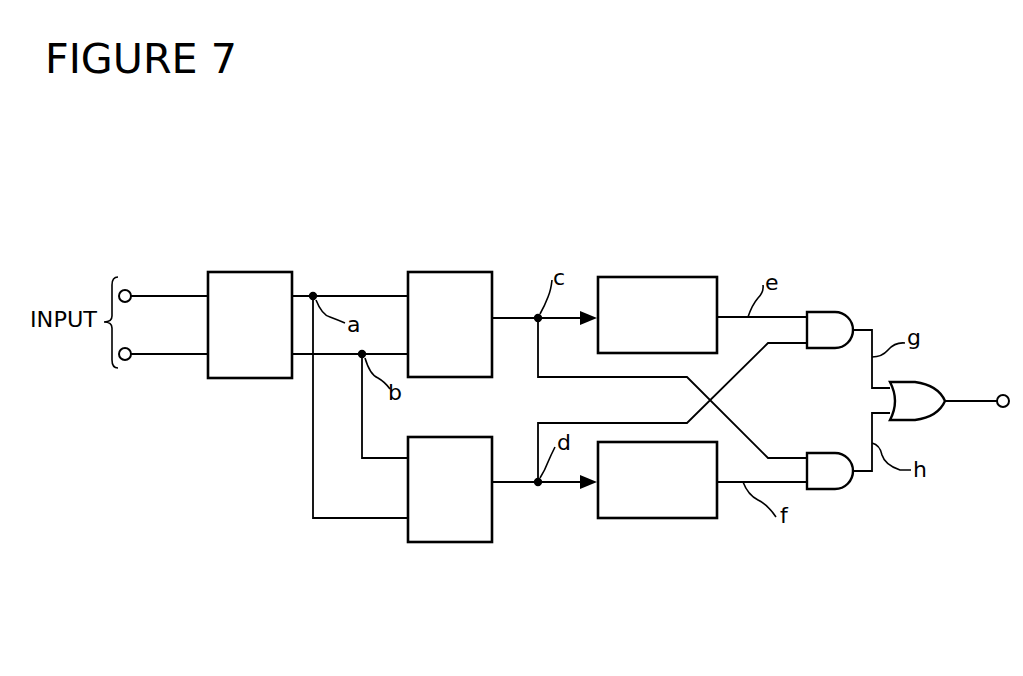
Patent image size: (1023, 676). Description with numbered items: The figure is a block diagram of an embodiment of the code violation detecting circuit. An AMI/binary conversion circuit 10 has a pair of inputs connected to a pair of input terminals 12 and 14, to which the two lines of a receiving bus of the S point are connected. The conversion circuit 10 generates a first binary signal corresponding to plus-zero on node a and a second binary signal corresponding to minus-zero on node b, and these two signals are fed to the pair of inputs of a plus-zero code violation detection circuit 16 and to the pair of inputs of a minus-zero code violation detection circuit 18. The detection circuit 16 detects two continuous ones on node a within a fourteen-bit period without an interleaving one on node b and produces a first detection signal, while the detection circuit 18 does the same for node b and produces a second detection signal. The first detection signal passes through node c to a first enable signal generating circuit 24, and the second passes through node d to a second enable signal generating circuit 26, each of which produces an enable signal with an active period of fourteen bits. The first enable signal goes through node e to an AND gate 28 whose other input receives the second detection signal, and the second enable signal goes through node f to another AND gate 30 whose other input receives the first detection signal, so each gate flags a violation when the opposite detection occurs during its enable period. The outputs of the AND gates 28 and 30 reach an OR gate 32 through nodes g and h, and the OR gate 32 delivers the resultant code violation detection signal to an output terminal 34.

The AMI/binary conversion circuit 10 is at (238, 272).
The input terminal 12 is at (131, 291).
The input terminal 14 is at (131, 361).
The "+0" code violation detection circuit 16 is at (445, 272).
The "-0" code violation detection circuit 18 is at (463, 542).
The first enable signal generating circuit 24 is at (657, 277).
The second enable signal generating circuit 26 is at (672, 518).
The AND gate 28 is at (828, 312).
The AND gate 30 is at (823, 489).
The OR gate 32 is at (923, 380).
The output terminal 34 is at (1003, 407).